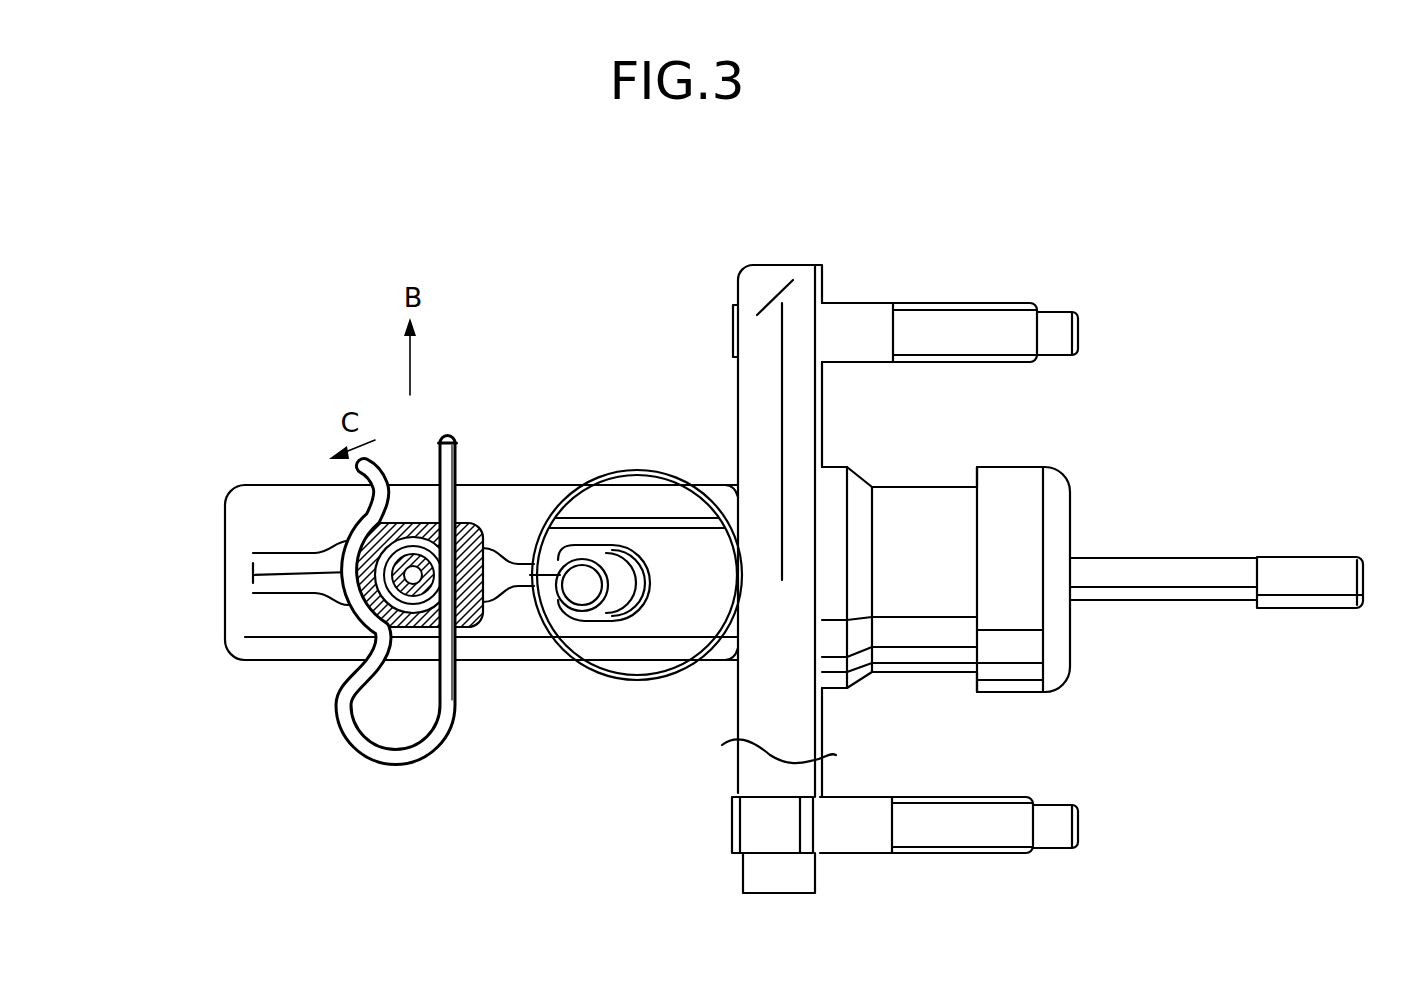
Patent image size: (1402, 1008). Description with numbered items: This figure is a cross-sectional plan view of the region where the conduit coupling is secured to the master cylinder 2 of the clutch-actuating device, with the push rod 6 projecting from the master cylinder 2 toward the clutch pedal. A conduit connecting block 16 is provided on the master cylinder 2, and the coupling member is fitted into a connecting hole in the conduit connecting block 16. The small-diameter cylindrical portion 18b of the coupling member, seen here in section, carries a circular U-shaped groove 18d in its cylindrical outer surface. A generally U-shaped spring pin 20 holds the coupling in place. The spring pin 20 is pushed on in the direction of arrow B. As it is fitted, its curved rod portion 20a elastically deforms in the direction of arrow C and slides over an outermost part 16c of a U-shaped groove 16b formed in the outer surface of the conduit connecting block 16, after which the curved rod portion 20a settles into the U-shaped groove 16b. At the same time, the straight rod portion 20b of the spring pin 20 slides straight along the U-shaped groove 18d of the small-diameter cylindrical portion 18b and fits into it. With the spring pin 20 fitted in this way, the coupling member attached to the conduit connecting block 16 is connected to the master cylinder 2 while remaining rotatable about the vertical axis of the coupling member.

The master cylinder 2 is at (1094, 418).
The push rod 6 is at (1170, 557).
The conduit connecting block 16 is at (478, 522).
The U-shaped groove 16b is at (352, 550).
The outermost part 16c is at (253, 575).
The small-diameter cylindrical portion 18b is at (416, 522).
The U-shaped groove 18d is at (350, 655).
The spring pin 20 is at (382, 623).
The curved rod portion 20a is at (367, 497).
The straight rod portion 20b is at (450, 440).